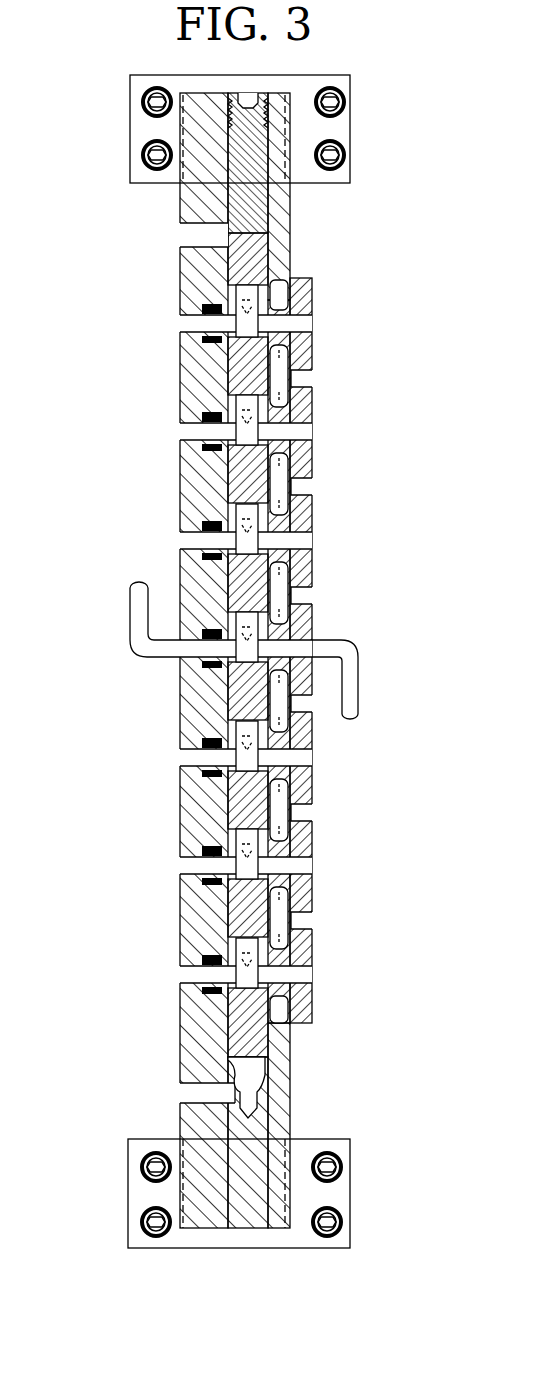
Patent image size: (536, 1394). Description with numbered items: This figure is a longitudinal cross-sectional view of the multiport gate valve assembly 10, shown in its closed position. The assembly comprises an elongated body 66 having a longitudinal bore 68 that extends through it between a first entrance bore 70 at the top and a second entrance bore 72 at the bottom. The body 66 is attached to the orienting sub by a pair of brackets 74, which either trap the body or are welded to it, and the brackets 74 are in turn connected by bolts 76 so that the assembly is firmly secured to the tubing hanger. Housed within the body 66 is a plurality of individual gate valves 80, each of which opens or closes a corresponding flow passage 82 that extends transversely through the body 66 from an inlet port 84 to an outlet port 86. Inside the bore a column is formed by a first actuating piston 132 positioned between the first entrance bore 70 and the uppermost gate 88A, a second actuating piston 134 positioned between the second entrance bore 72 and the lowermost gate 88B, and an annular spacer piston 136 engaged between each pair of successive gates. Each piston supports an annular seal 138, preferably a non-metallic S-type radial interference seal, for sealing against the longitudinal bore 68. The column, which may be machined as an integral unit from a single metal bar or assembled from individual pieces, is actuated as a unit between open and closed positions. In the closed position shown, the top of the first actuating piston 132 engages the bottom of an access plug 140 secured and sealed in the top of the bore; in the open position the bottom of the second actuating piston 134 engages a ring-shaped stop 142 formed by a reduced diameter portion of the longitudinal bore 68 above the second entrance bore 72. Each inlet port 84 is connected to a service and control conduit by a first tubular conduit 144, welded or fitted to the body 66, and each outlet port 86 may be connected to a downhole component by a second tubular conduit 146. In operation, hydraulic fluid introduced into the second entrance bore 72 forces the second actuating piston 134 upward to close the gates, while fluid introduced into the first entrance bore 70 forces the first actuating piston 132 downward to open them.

The multiport gate valve assembly 10 is at (95, 1165).
The elongated body 66 is at (180, 735).
The longitudinal bore 68 is at (268, 1070).
The first entrance bore 70 is at (180, 232).
The second entrance bore 72 is at (180, 1100).
The brackets 74 is at (227, 679).
The bolts 76 is at (320, 1228).
The gate valve 80 is at (195, 348).
The flow passage 82 is at (200, 325).
The inlet port 84 is at (178, 437).
The outlet port 86 is at (312, 437).
The uppermost gate 88A is at (268, 318).
The lowermost gate 88B is at (268, 978).
The first actuating piston 132 is at (272, 282).
The second actuating piston 134 is at (262, 1048).
The annular spacer piston 136 is at (290, 795).
The annular seal 138 is at (228, 800).
The access plug 140 is at (268, 213).
The ring-shaped stop 142 is at (228, 1068).
The first tubular conduit 144 is at (130, 607).
The second tubular conduit 146 is at (355, 672).